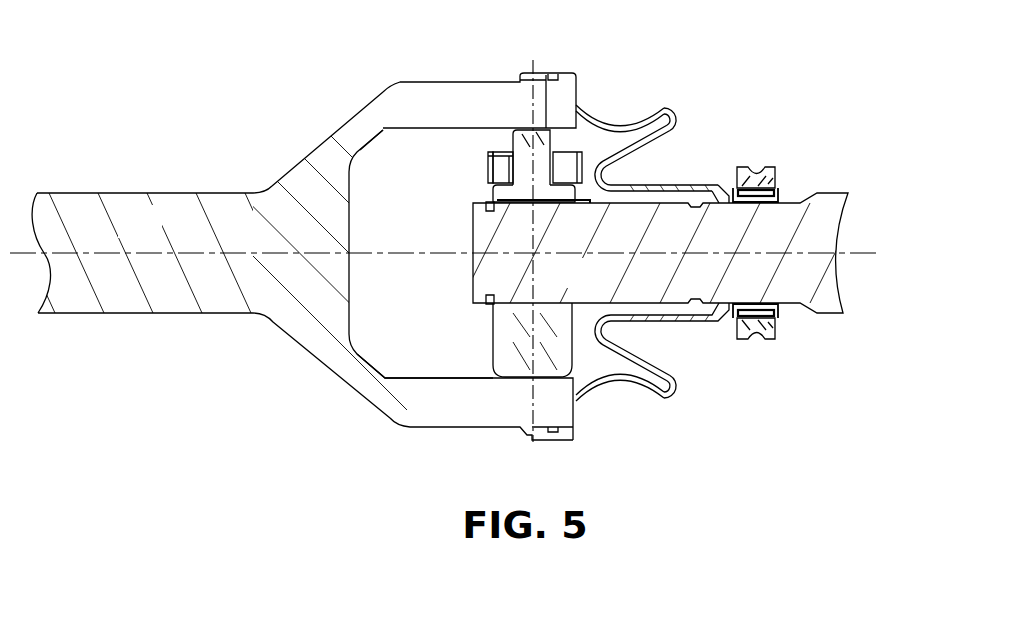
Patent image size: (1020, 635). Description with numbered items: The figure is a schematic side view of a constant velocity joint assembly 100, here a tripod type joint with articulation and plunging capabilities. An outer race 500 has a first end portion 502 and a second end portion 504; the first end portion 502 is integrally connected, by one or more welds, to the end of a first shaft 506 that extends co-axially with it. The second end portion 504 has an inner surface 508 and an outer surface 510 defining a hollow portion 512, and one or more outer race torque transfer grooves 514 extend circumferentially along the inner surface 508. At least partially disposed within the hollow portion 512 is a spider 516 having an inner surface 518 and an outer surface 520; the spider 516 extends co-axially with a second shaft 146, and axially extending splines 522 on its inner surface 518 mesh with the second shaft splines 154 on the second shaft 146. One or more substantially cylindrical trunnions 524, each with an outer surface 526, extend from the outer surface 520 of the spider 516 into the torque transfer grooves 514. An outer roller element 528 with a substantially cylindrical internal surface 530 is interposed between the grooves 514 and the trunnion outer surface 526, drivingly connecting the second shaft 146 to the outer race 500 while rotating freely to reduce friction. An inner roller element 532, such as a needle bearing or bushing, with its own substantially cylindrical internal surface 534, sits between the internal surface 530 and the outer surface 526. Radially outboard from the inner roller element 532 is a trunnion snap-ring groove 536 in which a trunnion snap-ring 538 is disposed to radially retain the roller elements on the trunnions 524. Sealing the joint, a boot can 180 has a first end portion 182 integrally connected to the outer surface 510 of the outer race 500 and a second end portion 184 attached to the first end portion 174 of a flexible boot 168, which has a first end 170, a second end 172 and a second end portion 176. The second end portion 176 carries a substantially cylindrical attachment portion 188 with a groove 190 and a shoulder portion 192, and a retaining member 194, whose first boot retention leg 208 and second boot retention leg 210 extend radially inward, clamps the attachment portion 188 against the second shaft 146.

The constant velocity joint assembly 100 is at (224, 392).
The second shaft 146 is at (569, 285).
The second shaft splines 154 is at (575, 207).
The flexible boot 168 is at (611, 173).
The first end 170 is at (674, 119).
The second end 172 is at (774, 203).
The first end portion 174 is at (664, 110).
The second end portion 176 is at (722, 192).
The boot can 180 is at (603, 391).
The first end portion 182 is at (552, 433).
The second end portion 184 is at (668, 395).
The substantially cylindrical attachment portion 188 is at (760, 312).
The groove 190 is at (735, 309).
The shoulder portion 192 is at (727, 327).
The retaining member 194 is at (774, 170).
The first boot retention leg 208 is at (727, 315).
The second boot retention leg 210 is at (779, 318).
The outer race 500 is at (323, 142).
The first end portion 502 is at (268, 188).
The second end portion 504 is at (437, 80).
The first shaft 506 is at (121, 235).
The inner surface 508 is at (400, 382).
The outer surface 510 is at (433, 428).
The hollow portion 512 is at (387, 358).
The outer race torque transfer grooves 514 is at (383, 143).
The spider 516 is at (503, 345).
The inner surface 518 is at (514, 205).
The outer surface 520 is at (495, 197).
The splines 522 is at (555, 206).
The trunnions 524 is at (523, 135).
The outer surface 526 is at (549, 148).
The outer roller element 528 is at (506, 152).
The substantially cylindrical internal surface 530 is at (508, 162).
The inner roller element 532 is at (505, 167).
The substantially cylindrical internal surface 534 is at (512, 170).
The trunnion snap-ring groove 536 is at (557, 77).
The trunnion snap-ring 538 is at (562, 143).